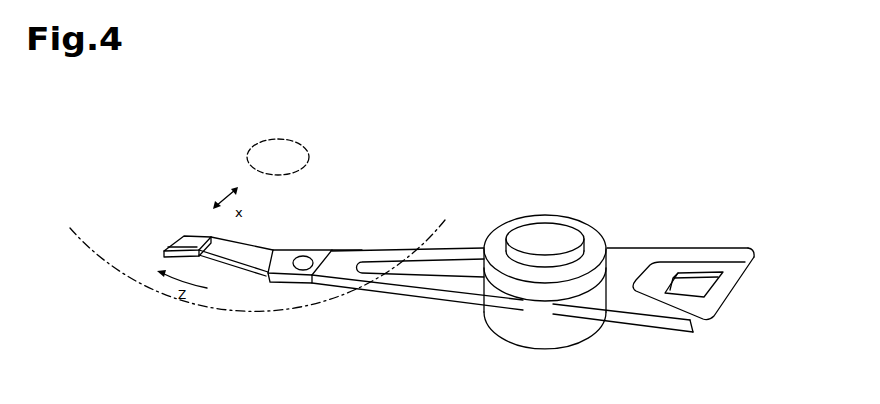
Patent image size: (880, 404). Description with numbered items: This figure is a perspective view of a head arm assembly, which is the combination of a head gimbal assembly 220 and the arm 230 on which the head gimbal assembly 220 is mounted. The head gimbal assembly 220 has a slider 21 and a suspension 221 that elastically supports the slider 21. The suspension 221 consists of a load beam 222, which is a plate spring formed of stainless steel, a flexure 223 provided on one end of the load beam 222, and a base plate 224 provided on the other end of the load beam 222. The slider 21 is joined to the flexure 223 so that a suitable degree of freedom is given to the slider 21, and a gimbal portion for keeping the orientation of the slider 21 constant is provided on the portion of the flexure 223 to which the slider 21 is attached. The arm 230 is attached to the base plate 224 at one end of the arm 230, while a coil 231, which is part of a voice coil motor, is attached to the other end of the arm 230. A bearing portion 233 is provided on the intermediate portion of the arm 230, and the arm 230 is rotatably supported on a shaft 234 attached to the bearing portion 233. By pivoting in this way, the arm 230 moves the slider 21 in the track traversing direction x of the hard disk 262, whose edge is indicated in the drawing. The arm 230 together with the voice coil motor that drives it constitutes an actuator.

The slider 21 is at (192, 240).
The head gimbal assembly 220 is at (263, 294).
The suspension 221 is at (263, 216).
The load beam 222 is at (277, 250).
The flexure 223 is at (168, 248).
The base plate 224 is at (337, 250).
The arm 230 is at (388, 292).
The coil 231 is at (740, 303).
The bearing portion 233 is at (500, 230).
The shaft 234 is at (555, 232).
The hard disk 262 is at (200, 310).